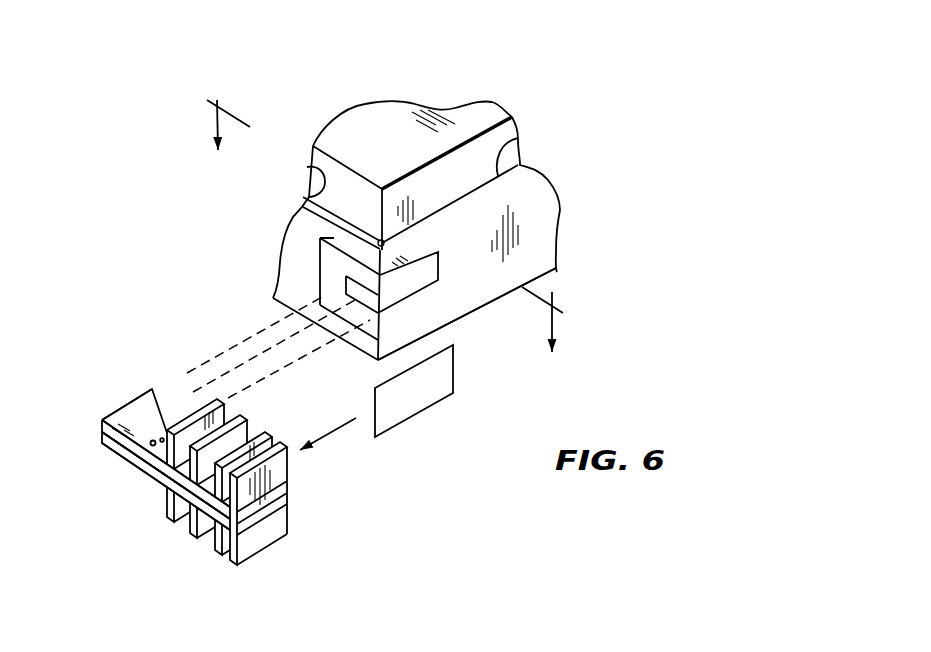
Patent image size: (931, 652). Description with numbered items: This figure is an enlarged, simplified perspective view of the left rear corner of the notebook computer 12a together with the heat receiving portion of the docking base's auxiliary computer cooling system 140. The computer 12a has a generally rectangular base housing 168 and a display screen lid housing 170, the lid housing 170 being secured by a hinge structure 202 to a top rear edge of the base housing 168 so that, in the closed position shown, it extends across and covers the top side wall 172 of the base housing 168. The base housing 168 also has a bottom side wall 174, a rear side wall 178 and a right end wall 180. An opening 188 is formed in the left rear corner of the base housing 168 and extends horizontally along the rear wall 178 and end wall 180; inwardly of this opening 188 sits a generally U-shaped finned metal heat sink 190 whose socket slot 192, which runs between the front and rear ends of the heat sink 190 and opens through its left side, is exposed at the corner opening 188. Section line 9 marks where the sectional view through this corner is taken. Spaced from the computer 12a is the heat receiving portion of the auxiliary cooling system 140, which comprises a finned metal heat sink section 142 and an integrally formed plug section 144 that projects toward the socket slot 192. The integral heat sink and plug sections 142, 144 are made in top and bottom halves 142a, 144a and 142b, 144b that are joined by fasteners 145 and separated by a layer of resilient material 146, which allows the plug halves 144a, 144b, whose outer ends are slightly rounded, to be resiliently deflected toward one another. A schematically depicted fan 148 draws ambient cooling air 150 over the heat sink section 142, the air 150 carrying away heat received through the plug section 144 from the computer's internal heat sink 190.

The notebook computer 12a is at (492, 67).
The display screen lid housing 170 is at (522, 126).
The top side wall 172 is at (520, 138).
The hinge structure 202 is at (307, 168).
The opening 188 is at (336, 243).
The base housing 168 is at (437, 238).
The rear side wall 178 is at (307, 233).
The right end wall 180 is at (543, 217).
The bottom side wall 174 is at (557, 271).
The finned metal heat sink 190 is at (318, 279).
The socket slot 192 is at (424, 283).
The section line 9 is at (388, 210).
The auxiliary computer cooling system 140 is at (227, 457).
The plug section 144 is at (119, 423).
The top plug half 144a is at (141, 428).
The bottom plug half 144b is at (112, 452).
The layer of resilient material 146 is at (145, 458).
The fasteners 145 is at (162, 440).
The finned metal heat sink section 142 is at (280, 499).
The top heat sink half 142a is at (277, 472).
The bottom heat sink half 142b is at (285, 513).
The ambient cooling air 150 is at (356, 418).
The fan 148 is at (433, 407).